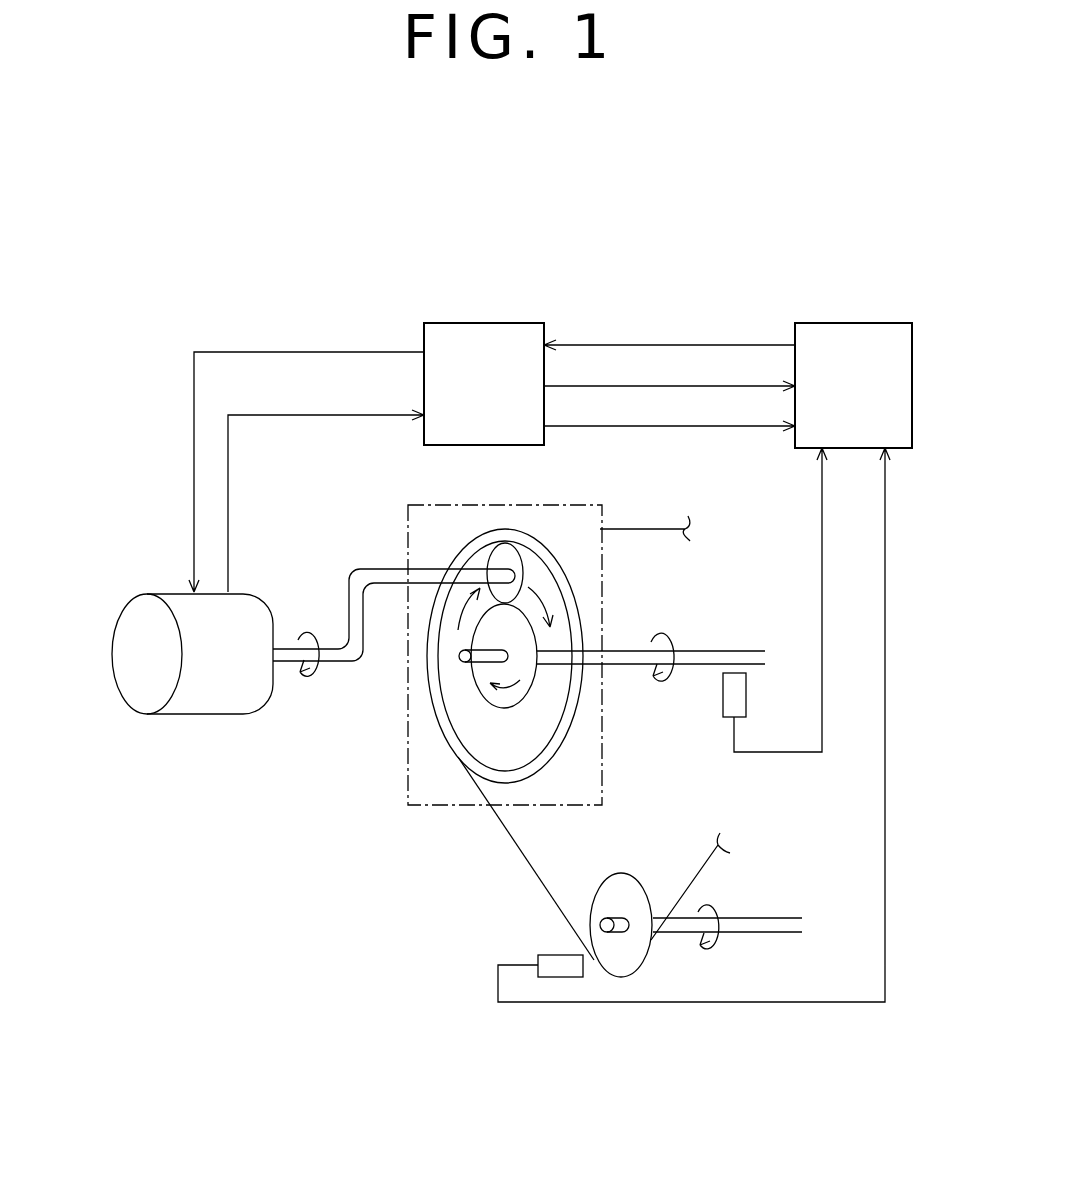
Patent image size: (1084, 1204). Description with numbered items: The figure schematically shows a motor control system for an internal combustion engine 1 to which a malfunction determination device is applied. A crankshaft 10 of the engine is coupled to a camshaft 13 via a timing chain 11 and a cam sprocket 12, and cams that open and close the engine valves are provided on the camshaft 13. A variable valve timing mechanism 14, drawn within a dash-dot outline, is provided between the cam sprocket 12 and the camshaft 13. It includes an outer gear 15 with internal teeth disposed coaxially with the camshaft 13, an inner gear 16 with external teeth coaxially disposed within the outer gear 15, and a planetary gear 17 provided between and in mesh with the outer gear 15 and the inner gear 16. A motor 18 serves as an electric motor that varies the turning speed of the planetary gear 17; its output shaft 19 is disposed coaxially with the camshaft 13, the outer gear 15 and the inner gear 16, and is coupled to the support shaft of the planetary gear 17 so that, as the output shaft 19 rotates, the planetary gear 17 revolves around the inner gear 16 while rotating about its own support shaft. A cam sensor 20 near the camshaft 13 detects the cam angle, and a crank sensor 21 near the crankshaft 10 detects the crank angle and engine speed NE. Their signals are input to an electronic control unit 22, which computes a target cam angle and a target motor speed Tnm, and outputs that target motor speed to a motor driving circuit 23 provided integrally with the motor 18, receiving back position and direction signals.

The internal combustion engine 1 is at (396, 884).
The crankshaft 10 is at (768, 917).
The timing chain 11 is at (517, 848).
The cam sprocket 12 is at (540, 770).
The camshaft 13 is at (718, 651).
The variable valve timing mechanism 14 is at (408, 758).
The outer gear 15 is at (527, 758).
The inner gear 16 is at (487, 704).
The planetary gear 17 is at (523, 568).
The motor 18 is at (207, 715).
The output shaft 19 is at (333, 666).
The cam sensor 20 is at (722, 703).
The crank sensor 21 is at (550, 954).
The electronic control unit 22 is at (868, 323).
The motor driving circuit 23 is at (497, 323).